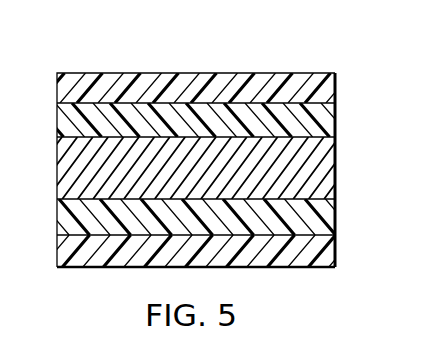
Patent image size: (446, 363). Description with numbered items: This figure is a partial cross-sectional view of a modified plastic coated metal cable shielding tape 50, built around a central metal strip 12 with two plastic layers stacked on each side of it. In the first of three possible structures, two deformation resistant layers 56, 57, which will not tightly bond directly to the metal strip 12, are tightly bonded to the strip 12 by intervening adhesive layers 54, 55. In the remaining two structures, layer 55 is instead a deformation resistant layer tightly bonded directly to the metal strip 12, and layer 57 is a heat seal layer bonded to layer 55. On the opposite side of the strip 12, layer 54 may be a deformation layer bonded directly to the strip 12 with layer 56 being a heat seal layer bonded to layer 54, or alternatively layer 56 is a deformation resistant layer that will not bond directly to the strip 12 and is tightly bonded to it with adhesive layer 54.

The cable shielding tape 50 is at (97, 72).
The deformation resistant layer 56 is at (335, 91).
The adhesive layer 54 is at (326, 124).
The metal strip 12 is at (325, 177).
The adhesive layer 55 is at (325, 219).
The deformation resistant layer 57 is at (322, 253).